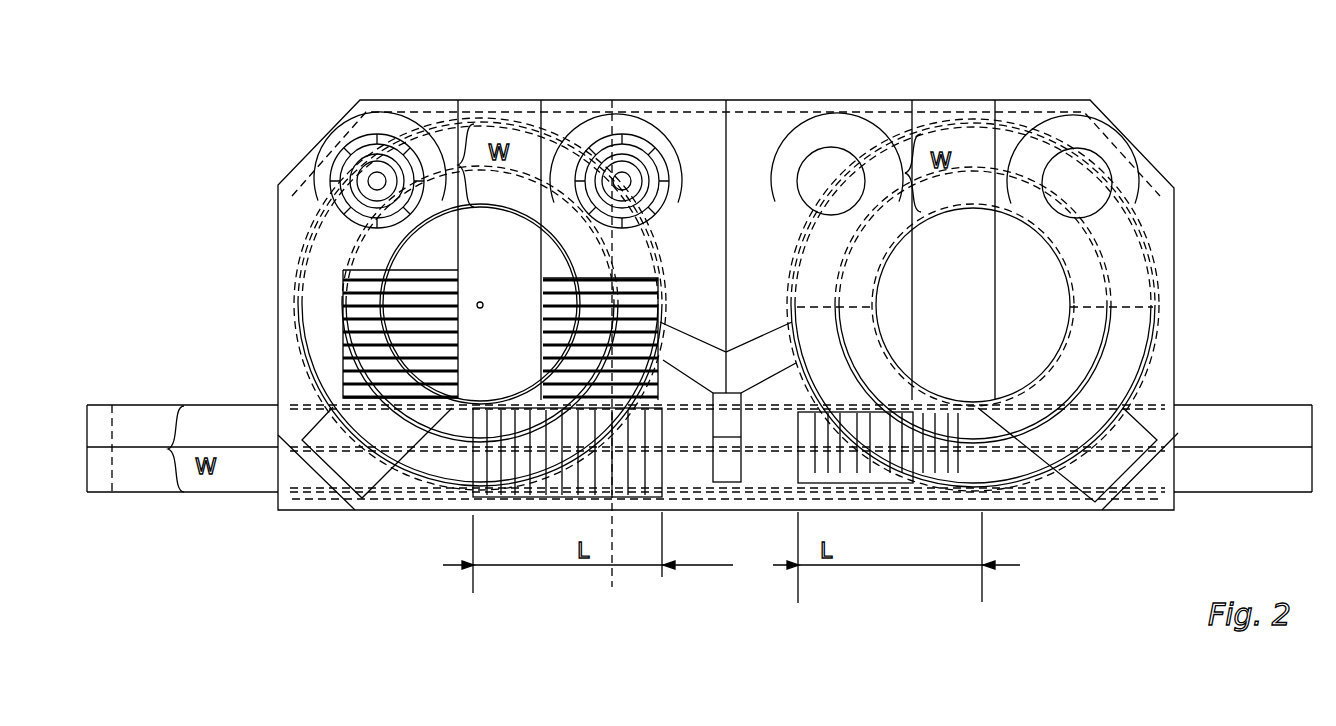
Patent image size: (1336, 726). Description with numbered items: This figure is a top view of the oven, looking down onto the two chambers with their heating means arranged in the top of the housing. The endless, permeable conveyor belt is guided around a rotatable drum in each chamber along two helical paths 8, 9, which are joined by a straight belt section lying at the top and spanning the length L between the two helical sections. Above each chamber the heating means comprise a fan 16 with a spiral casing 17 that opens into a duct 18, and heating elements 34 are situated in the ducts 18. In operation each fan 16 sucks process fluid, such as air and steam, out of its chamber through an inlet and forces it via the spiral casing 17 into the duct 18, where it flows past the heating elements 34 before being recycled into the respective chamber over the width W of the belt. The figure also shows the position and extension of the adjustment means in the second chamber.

The helical path 8 is at (320, 282).
The helical path 9 is at (966, 150).
The fan 16 is at (384, 135).
The spiral casing 17 is at (425, 135).
The duct 18 is at (350, 235).
The heating element 34 is at (355, 307).